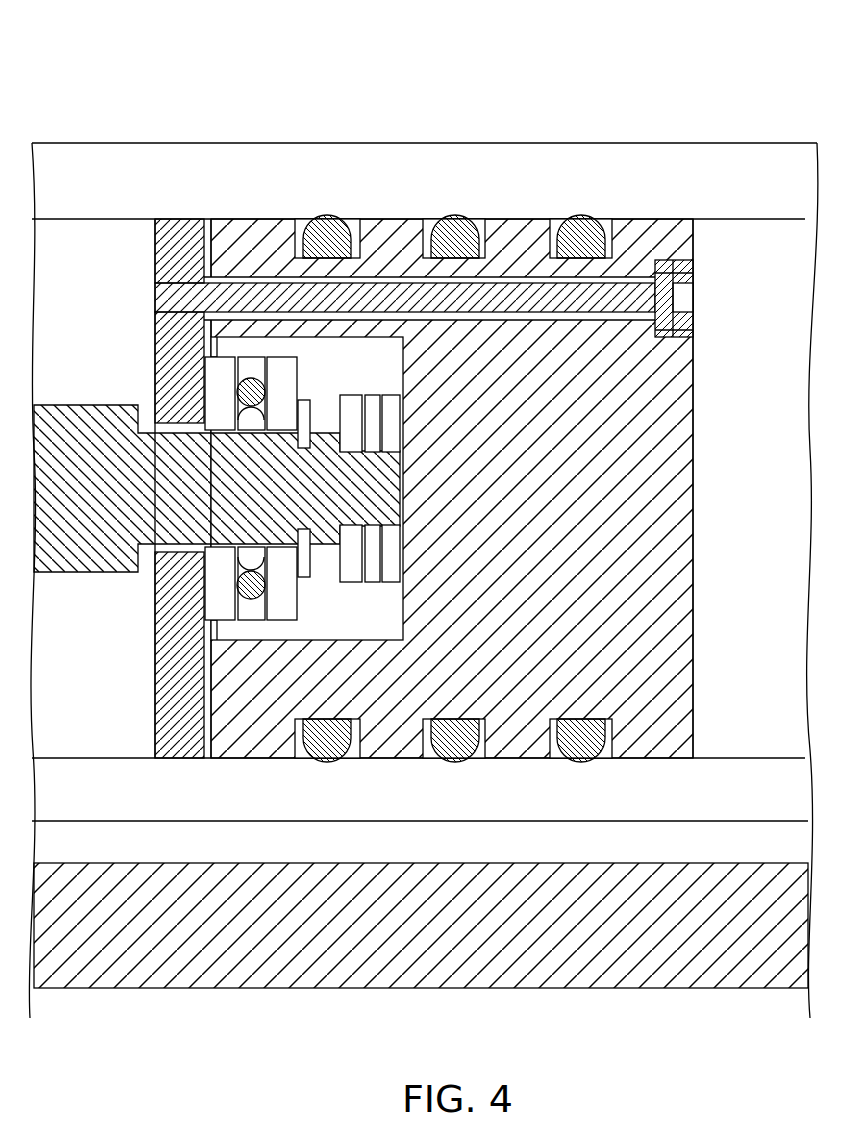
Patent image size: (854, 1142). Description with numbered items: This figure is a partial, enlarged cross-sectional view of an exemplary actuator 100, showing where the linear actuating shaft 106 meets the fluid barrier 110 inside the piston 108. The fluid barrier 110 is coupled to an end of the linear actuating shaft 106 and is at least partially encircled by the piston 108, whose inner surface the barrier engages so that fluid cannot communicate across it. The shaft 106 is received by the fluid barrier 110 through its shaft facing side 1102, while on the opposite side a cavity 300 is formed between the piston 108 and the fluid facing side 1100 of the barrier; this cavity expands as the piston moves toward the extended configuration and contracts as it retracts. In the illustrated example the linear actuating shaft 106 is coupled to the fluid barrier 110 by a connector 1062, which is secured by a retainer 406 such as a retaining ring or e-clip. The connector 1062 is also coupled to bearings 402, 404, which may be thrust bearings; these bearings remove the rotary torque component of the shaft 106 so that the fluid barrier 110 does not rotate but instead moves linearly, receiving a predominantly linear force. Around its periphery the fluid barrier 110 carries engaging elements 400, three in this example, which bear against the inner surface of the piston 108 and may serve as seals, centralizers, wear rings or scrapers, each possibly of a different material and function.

The actuator 100 is at (630, 50).
The piston 108 is at (503, 155).
The cavity 300 is at (750, 263).
The fluid barrier 110 is at (430, 520).
The fluid facing side 1100 is at (693, 543).
The shaft facing side 1102 is at (155, 648).
The bearing 402 is at (227, 320).
The bearing 404 is at (405, 535).
The retainer 406 is at (307, 397).
The engaging element 400 is at (433, 223).
The linear actuating shaft 106 is at (217, 450).
The connector 1062 is at (93, 417).